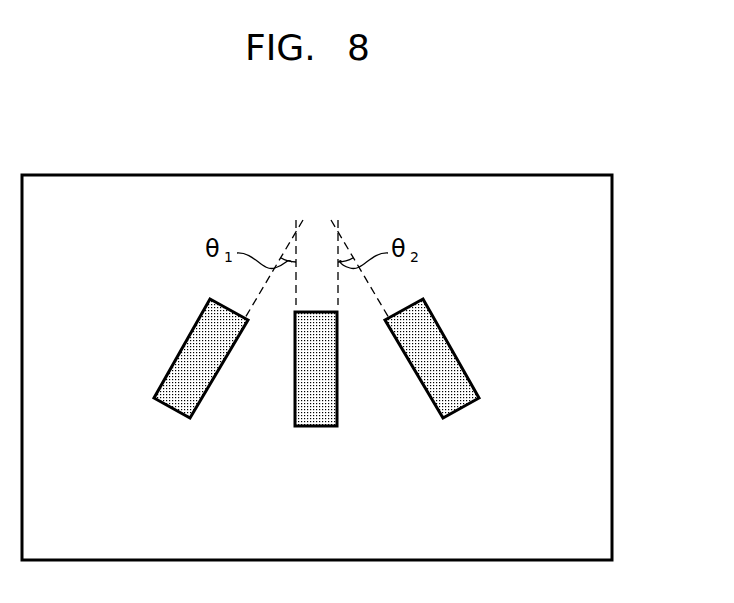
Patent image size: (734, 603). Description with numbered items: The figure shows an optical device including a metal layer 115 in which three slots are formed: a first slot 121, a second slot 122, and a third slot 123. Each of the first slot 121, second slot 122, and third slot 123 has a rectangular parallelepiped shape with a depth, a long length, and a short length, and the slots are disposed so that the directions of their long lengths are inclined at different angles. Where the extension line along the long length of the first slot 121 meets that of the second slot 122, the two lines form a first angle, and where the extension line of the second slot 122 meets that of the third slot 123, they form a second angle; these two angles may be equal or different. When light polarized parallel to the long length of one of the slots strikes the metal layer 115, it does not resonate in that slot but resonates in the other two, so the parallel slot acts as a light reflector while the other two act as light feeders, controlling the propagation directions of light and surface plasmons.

The metal layer 115 is at (600, 304).
The first slot 121 is at (181, 404).
The second slot 122 is at (318, 418).
The third slot 123 is at (455, 400).